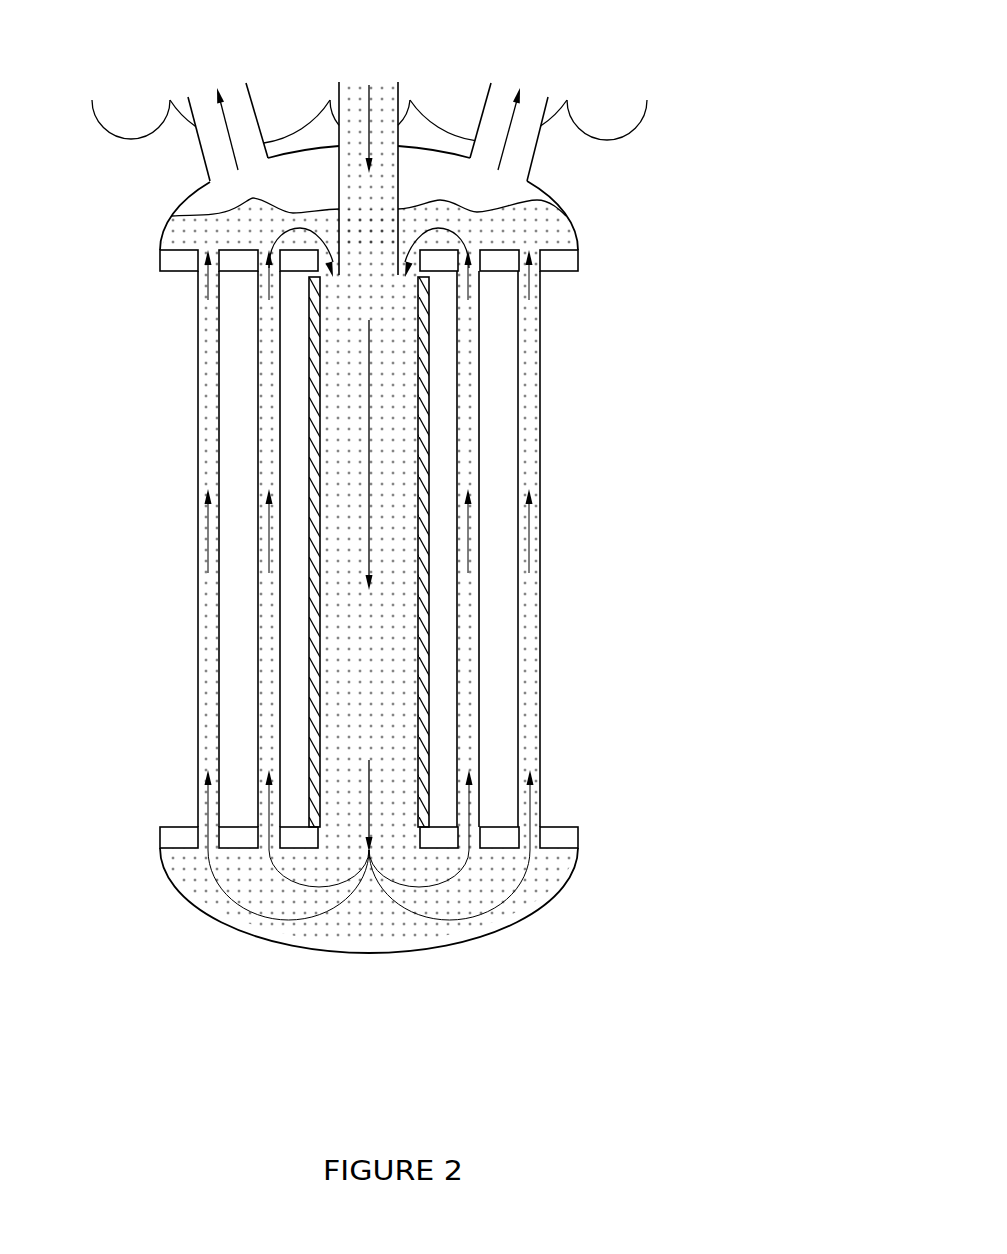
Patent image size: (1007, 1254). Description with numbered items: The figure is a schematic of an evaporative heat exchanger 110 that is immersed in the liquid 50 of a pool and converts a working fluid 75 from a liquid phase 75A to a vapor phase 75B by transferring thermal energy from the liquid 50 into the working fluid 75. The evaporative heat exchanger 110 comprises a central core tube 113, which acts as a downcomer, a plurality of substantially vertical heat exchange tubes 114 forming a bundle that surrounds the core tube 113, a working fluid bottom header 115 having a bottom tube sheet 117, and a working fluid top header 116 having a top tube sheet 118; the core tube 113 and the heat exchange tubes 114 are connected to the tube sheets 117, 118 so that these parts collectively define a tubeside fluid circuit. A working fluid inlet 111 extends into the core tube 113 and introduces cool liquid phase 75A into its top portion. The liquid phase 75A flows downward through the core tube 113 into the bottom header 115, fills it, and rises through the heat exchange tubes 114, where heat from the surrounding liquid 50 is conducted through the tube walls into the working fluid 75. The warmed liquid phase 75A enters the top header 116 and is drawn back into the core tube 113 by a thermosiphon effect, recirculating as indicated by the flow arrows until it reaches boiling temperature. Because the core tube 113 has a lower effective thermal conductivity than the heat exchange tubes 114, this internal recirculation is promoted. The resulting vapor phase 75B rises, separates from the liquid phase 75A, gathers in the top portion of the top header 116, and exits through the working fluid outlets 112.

The liquid of the pool 50 is at (130, 140).
The evaporative heat exchanger 110 is at (727, 147).
The working fluid inlet 111 is at (380, 93).
The working fluid outlet 112 is at (238, 80).
The core tube 113 is at (430, 438).
The heat exchange tubes 114 is at (205, 642).
The working fluid bottom header 115 is at (574, 878).
The working fluid top header 116 is at (157, 228).
The bottom tube sheet 117 is at (570, 838).
The top tube sheet 118 is at (570, 263).
The working fluid 75 is at (568, 220).
The liquid phase 75A is at (387, 641).
The vapor phase 75B is at (522, 156).